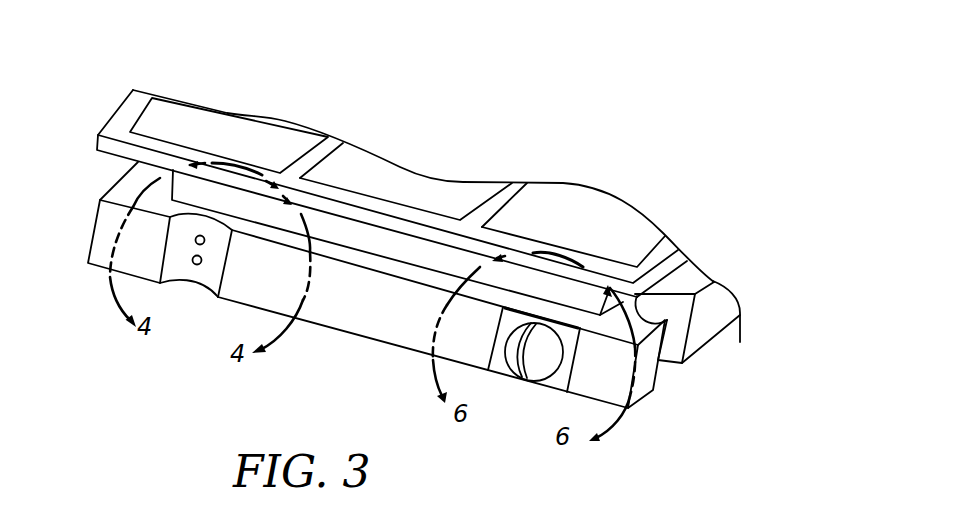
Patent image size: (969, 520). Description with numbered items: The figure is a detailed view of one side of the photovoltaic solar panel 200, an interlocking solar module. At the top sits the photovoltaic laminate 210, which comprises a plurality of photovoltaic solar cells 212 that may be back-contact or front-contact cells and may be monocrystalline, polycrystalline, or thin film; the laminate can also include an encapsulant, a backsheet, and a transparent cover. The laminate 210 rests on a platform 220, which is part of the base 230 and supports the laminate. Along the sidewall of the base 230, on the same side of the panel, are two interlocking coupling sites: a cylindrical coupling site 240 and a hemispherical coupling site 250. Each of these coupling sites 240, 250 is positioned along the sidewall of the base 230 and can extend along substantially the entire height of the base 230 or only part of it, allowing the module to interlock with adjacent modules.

The photovoltaic solar panel 200 is at (524, 92).
The photovoltaic laminate 210 is at (510, 197).
The photovoltaic solar cells 212 is at (368, 175).
The platform 220 is at (371, 237).
The base 230 is at (400, 327).
The cylindrical coupling site 240 is at (193, 298).
The hemispherical coupling site 250 is at (512, 394).